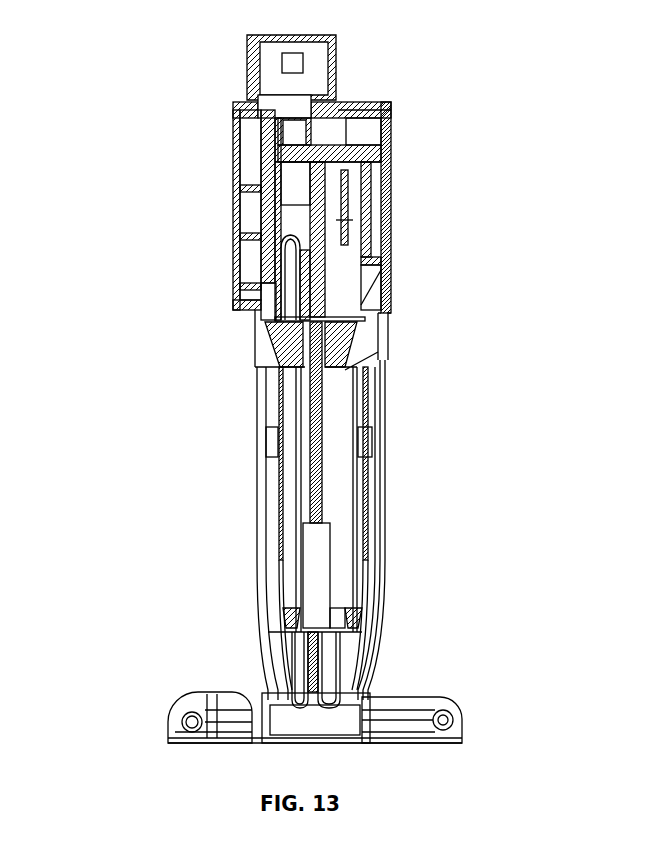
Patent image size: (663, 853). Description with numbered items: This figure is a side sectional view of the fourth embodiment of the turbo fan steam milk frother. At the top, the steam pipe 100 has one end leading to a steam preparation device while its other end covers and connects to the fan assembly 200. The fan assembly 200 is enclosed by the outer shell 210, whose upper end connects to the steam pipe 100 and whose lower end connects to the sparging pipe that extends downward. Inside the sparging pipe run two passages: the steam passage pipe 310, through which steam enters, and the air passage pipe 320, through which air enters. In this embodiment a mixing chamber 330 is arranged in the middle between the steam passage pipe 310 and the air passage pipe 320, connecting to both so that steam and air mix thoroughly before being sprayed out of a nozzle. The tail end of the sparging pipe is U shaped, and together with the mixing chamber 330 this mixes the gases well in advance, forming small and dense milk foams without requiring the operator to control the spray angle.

The steam pipe 100 is at (224, 55).
The fan assembly 200 is at (373, 128).
The outer shell 210 is at (172, 215).
The steam passage pipe 310 is at (180, 505).
The air passage pipe 320 is at (420, 511).
The mixing chamber 330 is at (381, 575).